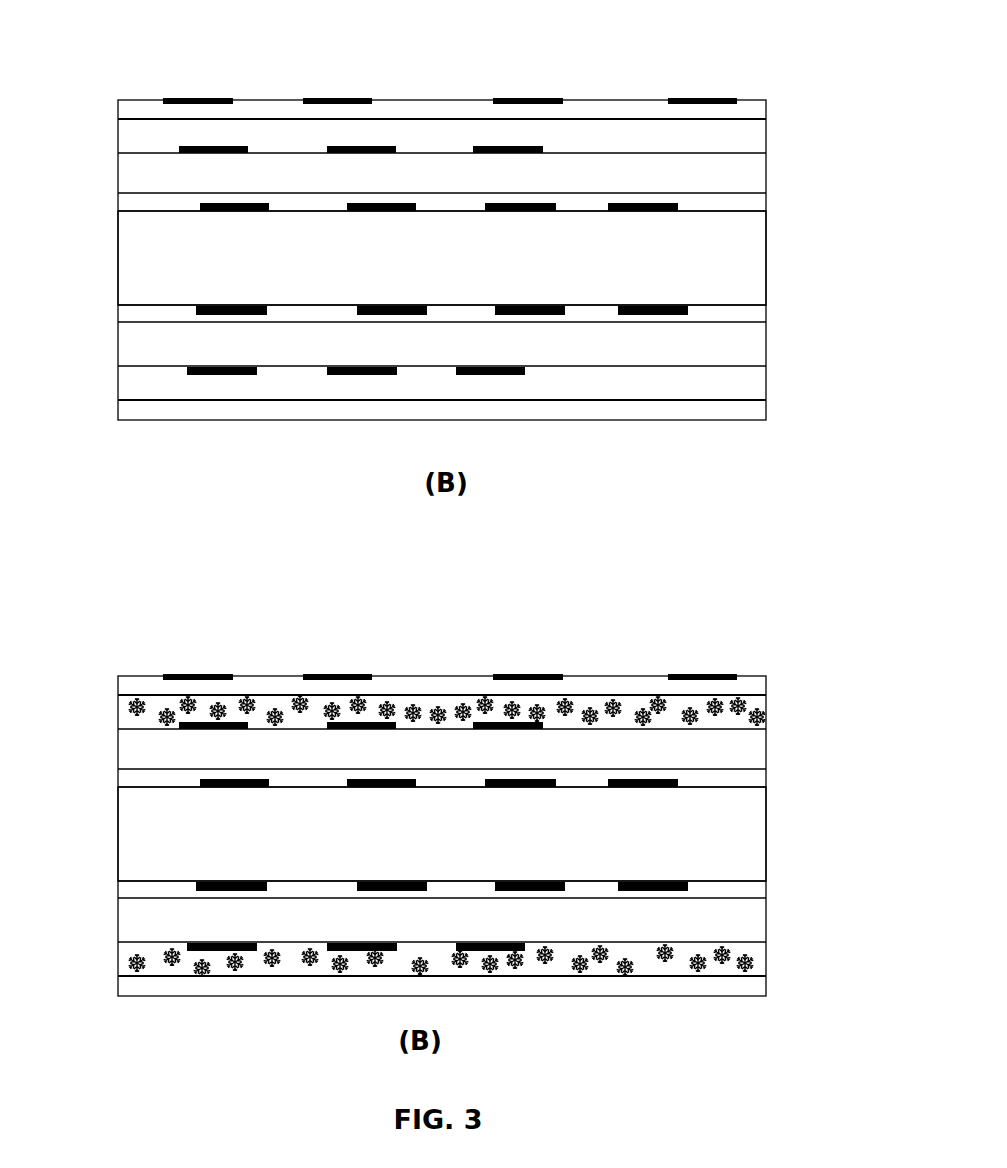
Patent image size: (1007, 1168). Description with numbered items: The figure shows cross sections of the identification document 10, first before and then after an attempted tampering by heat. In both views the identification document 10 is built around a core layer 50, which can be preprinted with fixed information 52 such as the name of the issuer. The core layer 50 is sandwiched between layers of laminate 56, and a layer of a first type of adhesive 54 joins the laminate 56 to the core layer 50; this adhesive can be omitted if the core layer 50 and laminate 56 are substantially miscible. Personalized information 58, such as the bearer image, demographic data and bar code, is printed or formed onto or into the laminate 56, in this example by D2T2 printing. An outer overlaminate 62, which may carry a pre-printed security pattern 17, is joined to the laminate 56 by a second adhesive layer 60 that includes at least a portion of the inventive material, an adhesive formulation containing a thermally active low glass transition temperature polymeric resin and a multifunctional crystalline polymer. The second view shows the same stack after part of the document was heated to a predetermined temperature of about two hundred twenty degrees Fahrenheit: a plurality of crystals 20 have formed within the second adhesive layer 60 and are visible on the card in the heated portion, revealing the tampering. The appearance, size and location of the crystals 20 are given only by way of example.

In FIG. 3A, the identification document 10 is at (120, 73).
In FIG. 3B, the identification document 10 is at (400, 816).
In FIG. 3A, the pre-printed security pattern 17 is at (200, 99).
In FIG. 3B, the pre-printed security pattern 17 is at (450, 632).
In FIG. 3B, the crystals 20 is at (447, 793).
In FIG. 3A, the core layer 50 is at (766, 252).
In FIG. 3B, the core layer 50 is at (487, 834).
In FIG. 3A, the fixed information 52 is at (196, 311).
In FIG. 3B, the fixed information 52 is at (345, 835).
In FIG. 3A, the first type of adhesive 54 is at (766, 202).
In FIG. 3B, the first type of adhesive 54 is at (495, 824).
In FIG. 3A, the laminate 56 is at (766, 172).
In FIG. 3B, the laminate 56 is at (490, 834).
In FIG. 3A, the personalized information 58 is at (179, 149).
In FIG. 3B, the personalized information 58 is at (278, 836).
In FIG. 3A, the second adhesive layer 60 is at (766, 130).
In FIG. 3B, the second adhesive layer 60 is at (481, 831).
In FIG. 3A, the overlaminate 62 is at (766, 109).
In FIG. 3B, the overlaminate 62 is at (476, 823).